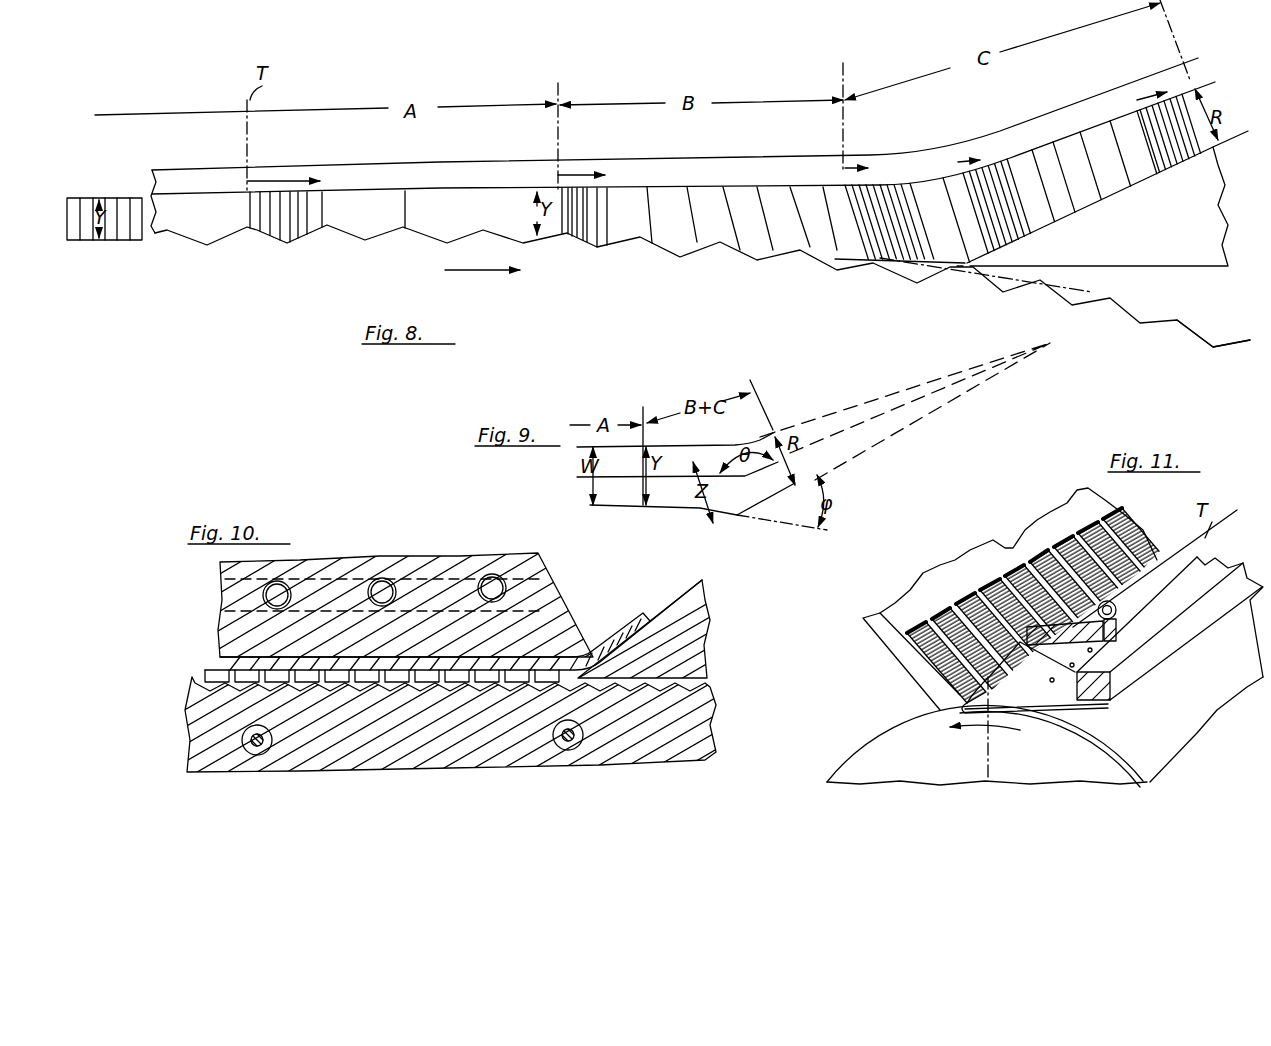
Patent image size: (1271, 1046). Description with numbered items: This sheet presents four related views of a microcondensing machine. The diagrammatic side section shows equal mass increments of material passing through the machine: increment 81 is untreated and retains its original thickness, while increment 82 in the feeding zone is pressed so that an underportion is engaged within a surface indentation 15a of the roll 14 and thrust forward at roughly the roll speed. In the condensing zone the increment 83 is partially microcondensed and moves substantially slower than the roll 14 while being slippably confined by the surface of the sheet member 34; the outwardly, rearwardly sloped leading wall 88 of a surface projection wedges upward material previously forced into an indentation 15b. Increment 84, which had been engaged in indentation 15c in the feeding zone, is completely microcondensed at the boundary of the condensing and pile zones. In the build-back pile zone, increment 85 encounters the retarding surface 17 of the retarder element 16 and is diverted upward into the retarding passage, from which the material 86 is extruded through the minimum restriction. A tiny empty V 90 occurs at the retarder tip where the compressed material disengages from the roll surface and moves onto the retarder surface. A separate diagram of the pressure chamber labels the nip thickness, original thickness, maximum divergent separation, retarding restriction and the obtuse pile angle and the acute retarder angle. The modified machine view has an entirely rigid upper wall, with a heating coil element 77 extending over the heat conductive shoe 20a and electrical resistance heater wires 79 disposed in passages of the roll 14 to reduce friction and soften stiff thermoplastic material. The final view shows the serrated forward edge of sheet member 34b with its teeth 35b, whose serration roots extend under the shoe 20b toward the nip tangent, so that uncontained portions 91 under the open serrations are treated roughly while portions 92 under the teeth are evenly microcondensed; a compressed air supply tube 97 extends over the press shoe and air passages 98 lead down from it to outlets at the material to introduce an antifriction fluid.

In FIG. 8, the roll 14 is at (796, 302).
In FIG. 10, the roll 14 is at (447, 742).
In FIG. 11, the roll 14 is at (860, 755).
In FIG. 8, the surface indentation 15a is at (325, 250).
In FIG. 8, the indentation 15b is at (648, 253).
In FIG. 8, the indentation 15c is at (1250, 345).
In FIG. 8, the retarder element 16 is at (1177, 230).
In FIG. 10, the retarder element 16 is at (690, 641).
In FIG. 11, the retarder element 16 is at (925, 684).
In FIG. 8, the retarding surface 17 is at (1088, 200).
In FIG. 11, the retarding surface 17 is at (975, 560).
In FIG. 10, the heat conductive shoe 20a is at (222, 624).
In FIG. 11, the shoe 20b is at (1113, 688).
In FIG. 8, the sheet member 34 is at (731, 162).
In FIG. 10, the sheet member 34 is at (540, 656).
In FIG. 11, the sheet member 34b is at (1067, 712).
In FIG. 11, the teeth 35b is at (1138, 553).
In FIG. 10, the heating coil element 77 is at (390, 578).
In FIG. 10, the electrical resistance heater wires 79 is at (256, 752).
In FIG. 8, the increment of material 81 is at (122, 243).
In FIG. 8, the increment of material 82 is at (290, 197).
In FIG. 8, the increment of material 83 is at (575, 225).
In FIG. 8, the increment of material 84 is at (865, 197).
In FIG. 8, the material increment 85 is at (982, 182).
In FIG. 8, the material 86 is at (1142, 123).
In FIG. 8, the leading wall 88 is at (576, 251).
In FIG. 8, the V 90 is at (960, 268).
In FIG. 11, the uncontained portions 91 is at (928, 610).
In FIG. 11, the portions 92 is at (1010, 565).
In FIG. 11, the compressed air supply tube 97 is at (1200, 554).
In FIG. 11, the air passages 98 is at (1120, 630).